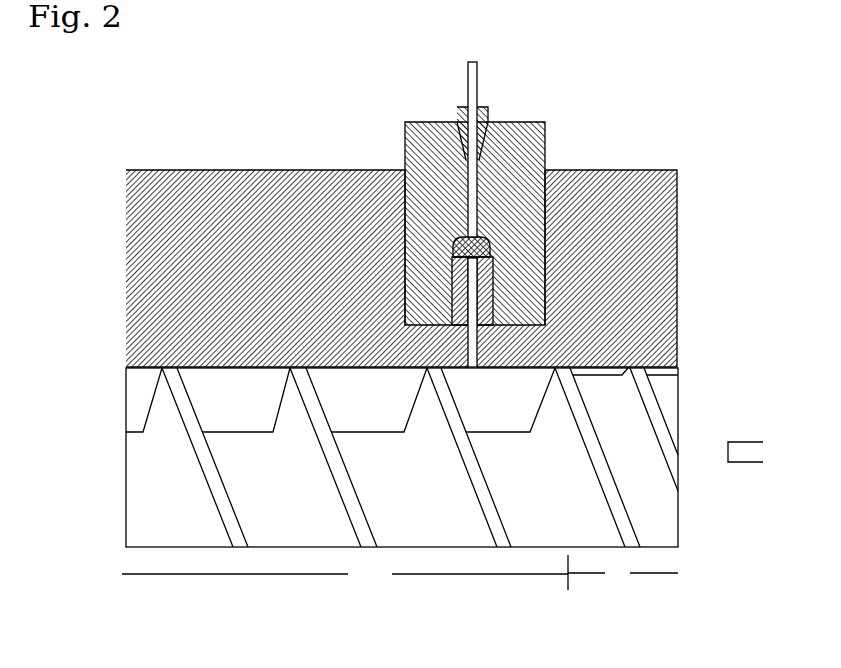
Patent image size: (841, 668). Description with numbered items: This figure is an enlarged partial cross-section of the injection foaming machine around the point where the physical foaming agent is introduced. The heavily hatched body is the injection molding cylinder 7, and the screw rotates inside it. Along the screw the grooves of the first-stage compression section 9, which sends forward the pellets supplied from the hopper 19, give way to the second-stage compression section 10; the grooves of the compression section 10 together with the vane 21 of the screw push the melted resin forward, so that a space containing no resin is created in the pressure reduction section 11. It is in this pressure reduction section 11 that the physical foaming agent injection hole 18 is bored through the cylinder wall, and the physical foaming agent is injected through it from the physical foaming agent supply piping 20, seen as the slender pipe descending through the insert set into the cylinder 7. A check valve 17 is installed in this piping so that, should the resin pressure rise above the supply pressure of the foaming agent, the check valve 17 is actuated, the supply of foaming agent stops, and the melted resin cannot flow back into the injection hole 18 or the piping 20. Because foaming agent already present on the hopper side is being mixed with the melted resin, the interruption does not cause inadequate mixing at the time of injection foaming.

The injection molding cylinder 7 is at (167, 228).
The first-stage compression section 9 is at (623, 572).
The second-stage compression section 10 is at (345, 575).
The pressure reduction section 11 is at (402, 508).
The check valve 17 is at (427, 157).
The physical foaming agent injection hole 18 is at (480, 360).
The hopper 19 is at (458, 107).
The physical foaming agent supply piping 20 is at (470, 82).
The vane 21 is at (342, 487).